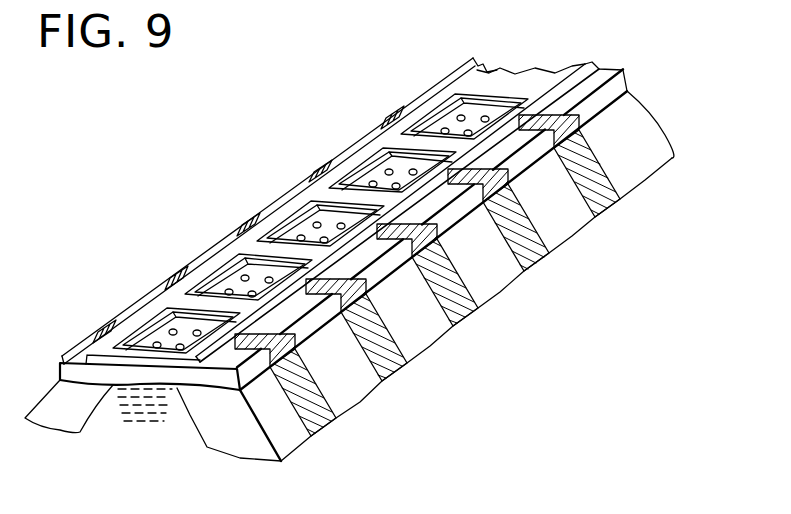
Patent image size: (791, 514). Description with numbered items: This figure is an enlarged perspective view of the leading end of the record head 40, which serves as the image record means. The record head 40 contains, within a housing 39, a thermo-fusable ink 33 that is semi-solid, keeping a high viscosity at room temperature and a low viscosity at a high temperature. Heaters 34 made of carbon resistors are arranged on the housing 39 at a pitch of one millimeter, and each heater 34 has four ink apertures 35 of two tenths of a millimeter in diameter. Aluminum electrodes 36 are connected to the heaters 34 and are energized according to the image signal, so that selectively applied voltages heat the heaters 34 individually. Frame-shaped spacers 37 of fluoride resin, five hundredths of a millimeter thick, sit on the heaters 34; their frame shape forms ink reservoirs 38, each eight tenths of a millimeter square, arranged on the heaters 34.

The thermo-fusable ink 33 is at (147, 416).
The heater 34 is at (450, 112).
The ink aperture 35 is at (296, 234).
The aluminum electrode 36 is at (172, 273).
The frame-shaped spacer 37 is at (487, 63).
The ink reservoir 38 is at (362, 165).
The housing 39 is at (250, 452).
The record head 40 is at (638, 90).